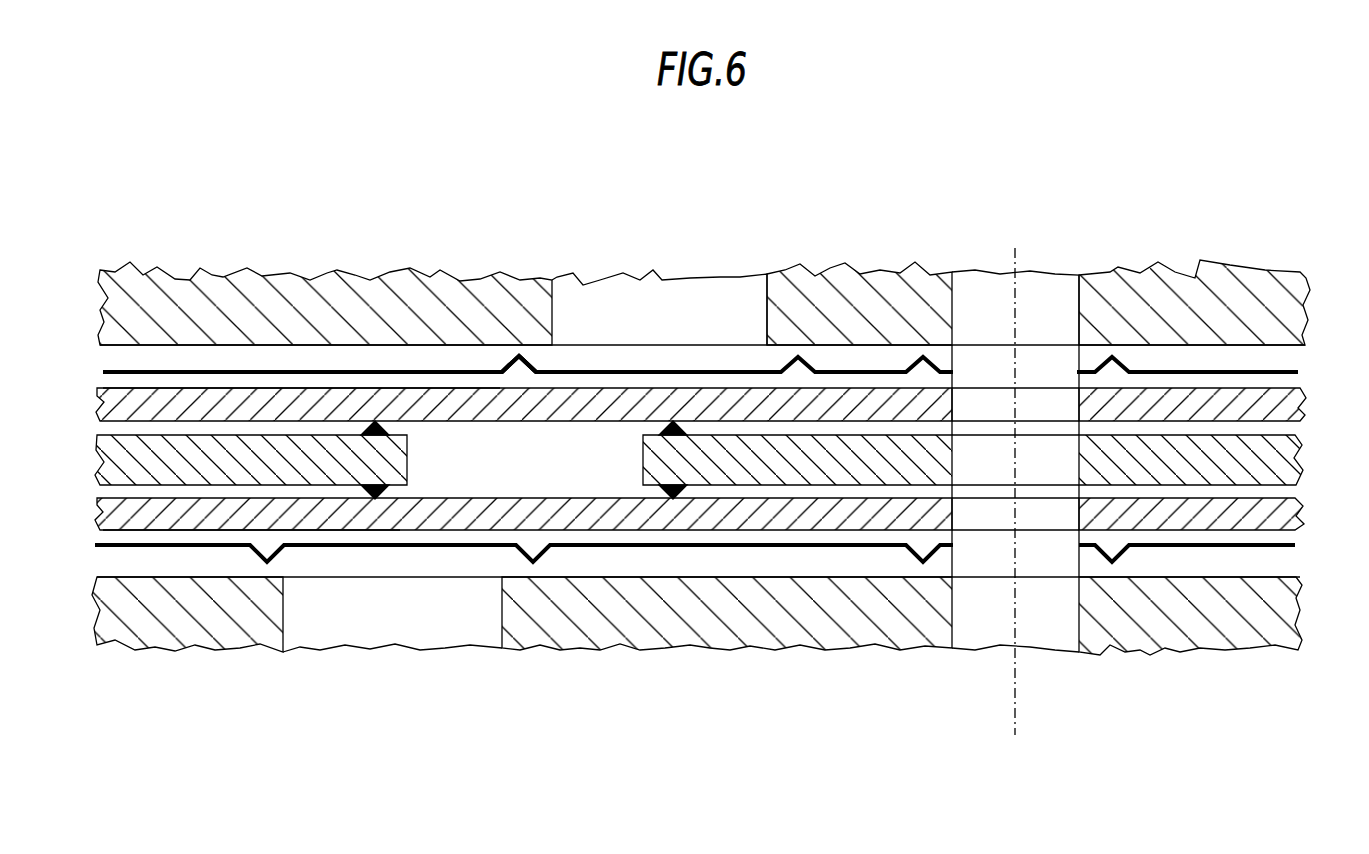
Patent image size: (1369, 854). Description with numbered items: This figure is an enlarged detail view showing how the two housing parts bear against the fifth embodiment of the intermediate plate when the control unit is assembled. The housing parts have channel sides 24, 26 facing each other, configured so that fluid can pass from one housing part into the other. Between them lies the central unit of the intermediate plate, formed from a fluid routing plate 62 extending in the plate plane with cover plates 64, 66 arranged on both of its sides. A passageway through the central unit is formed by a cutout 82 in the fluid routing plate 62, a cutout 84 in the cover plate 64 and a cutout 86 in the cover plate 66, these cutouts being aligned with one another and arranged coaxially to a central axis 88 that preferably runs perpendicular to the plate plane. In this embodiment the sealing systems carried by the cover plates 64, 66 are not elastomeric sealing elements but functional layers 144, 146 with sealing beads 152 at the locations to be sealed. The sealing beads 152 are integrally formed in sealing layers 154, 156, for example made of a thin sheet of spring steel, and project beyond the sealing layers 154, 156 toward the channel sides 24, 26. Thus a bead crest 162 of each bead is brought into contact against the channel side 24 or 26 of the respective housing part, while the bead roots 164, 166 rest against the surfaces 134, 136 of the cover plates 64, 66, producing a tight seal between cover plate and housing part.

The channel side 24 is at (337, 347).
The channel side 26 is at (234, 578).
The fluid routing plate 62 is at (821, 478).
The cover plate 64 is at (708, 405).
The cover plate 66 is at (718, 513).
The cutout in the fluid routing plate 82 is at (1060, 478).
The cutout in the cover plate 84 is at (977, 407).
The cutout in the cover plate 86 is at (980, 515).
The central axis 88 is at (1015, 702).
The surface of the cover plate 134 is at (237, 387).
The surface of the cover plate 136 is at (138, 530).
The functional layer 144 is at (410, 370).
The functional layer 146 is at (193, 545).
The sealing bead 152 is at (524, 365).
The sealing layer 154 is at (462, 370).
The sealing layer 156 is at (648, 547).
The bead crest 162 is at (519, 357).
The bead root 164 is at (496, 370).
The bead root 166 is at (538, 370).